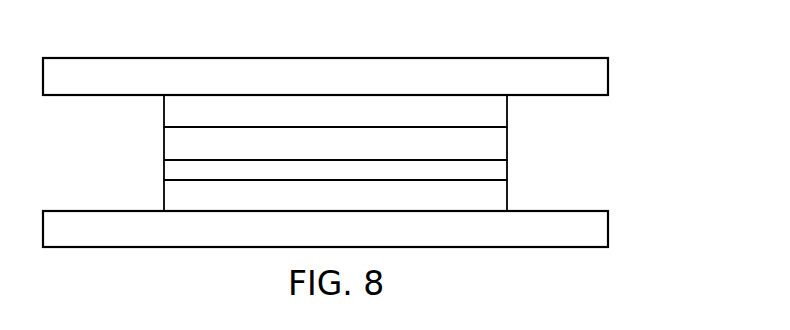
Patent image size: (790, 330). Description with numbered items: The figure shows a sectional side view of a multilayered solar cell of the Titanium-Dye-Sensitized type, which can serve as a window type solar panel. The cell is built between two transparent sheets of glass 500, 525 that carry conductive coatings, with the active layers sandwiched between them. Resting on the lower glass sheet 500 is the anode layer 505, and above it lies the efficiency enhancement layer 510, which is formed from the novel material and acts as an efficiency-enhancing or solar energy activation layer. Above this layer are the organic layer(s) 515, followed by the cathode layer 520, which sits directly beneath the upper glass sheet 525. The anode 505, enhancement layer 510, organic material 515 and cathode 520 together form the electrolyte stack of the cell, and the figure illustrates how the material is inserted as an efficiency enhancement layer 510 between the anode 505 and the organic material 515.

The transparent sheet of glass 500 is at (593, 230).
The anode layer 505 is at (490, 196).
The efficiency enhancement layer 510 is at (175, 171).
The organic layer 515 is at (495, 145).
The cathode layer 520 is at (495, 113).
The transparent sheet of glass 525 is at (593, 78).